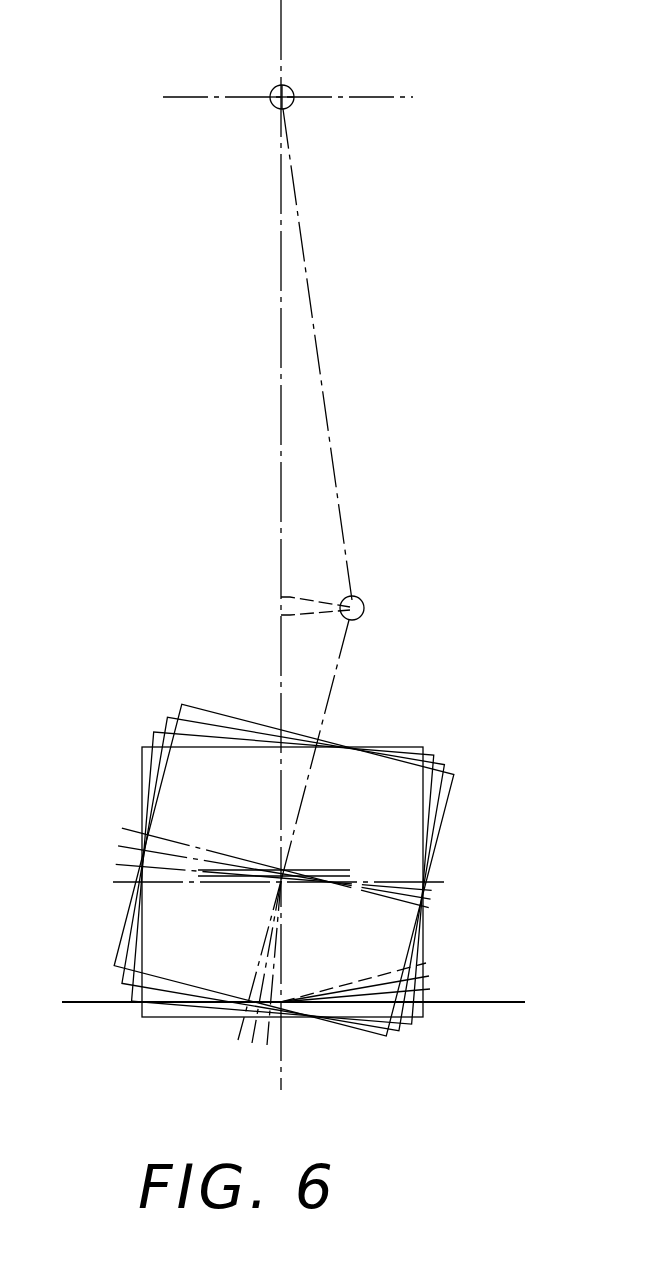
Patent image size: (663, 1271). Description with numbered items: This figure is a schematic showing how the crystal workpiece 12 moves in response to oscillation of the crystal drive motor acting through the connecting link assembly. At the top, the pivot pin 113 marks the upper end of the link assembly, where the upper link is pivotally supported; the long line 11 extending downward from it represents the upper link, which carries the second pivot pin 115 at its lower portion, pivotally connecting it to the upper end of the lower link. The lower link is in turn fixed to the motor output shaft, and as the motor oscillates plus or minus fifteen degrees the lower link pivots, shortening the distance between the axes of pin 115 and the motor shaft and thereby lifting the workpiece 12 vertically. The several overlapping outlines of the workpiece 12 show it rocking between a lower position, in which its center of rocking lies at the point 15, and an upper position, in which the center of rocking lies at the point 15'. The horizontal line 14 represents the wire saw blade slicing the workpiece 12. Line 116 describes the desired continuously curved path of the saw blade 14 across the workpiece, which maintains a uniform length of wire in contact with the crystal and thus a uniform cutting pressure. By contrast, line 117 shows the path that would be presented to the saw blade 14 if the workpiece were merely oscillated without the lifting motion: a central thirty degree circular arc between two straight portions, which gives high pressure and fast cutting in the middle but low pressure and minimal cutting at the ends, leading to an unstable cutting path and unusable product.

The arm 11 is at (312, 331).
The workpiece 12 is at (387, 775).
The wire saw blade 14 is at (487, 1002).
The center of rocking (lower position) 15 is at (253, 963).
The center of rocking (upper position) 15' is at (256, 841).
The pivot pin 113 is at (273, 91).
The second pivot pin 115 is at (345, 598).
The line (desired saw path) 116 is at (418, 1020).
The line (oscillation-only path) 117 is at (387, 971).